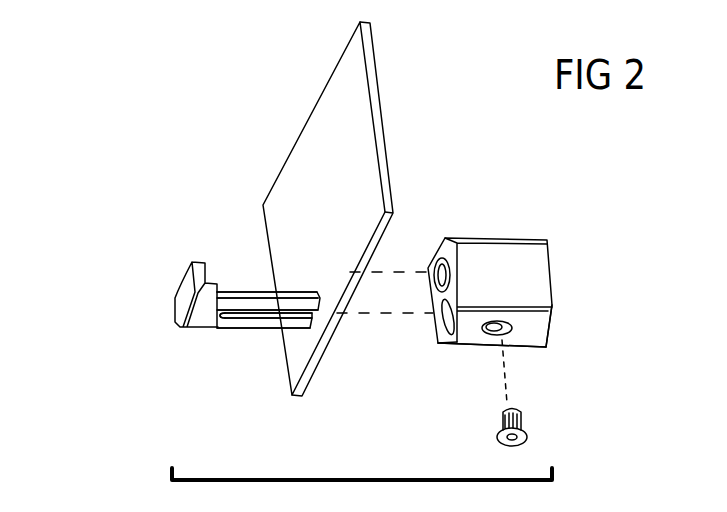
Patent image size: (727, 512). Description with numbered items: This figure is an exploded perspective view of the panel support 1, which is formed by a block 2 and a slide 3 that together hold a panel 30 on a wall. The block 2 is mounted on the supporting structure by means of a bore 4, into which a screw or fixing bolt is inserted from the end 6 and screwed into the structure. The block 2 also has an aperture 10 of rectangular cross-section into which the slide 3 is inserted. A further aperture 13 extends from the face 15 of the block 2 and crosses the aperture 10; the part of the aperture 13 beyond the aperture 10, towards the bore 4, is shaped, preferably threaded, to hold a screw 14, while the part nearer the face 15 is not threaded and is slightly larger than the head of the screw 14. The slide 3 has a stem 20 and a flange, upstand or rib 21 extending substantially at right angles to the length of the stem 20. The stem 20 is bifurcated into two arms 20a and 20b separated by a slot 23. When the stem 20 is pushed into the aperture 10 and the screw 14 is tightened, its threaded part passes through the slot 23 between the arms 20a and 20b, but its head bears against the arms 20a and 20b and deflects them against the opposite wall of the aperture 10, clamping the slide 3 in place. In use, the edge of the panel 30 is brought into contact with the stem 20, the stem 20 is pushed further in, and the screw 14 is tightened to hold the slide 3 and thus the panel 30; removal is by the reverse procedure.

The panel support 1 is at (533, 242).
The block 2 is at (437, 343).
The slide 3 is at (212, 325).
The bore 4 is at (442, 270).
The end 6 is at (438, 303).
The aperture 10 is at (440, 315).
The further aperture 13 is at (505, 326).
The screw 14 is at (505, 427).
The face 15 is at (537, 318).
The stem 20 is at (240, 332).
The arm 20a is at (282, 325).
The arm 20b is at (270, 292).
The flange, upstand or rib 21 is at (192, 292).
The slot 23 is at (227, 310).
The panel 30 is at (323, 138).